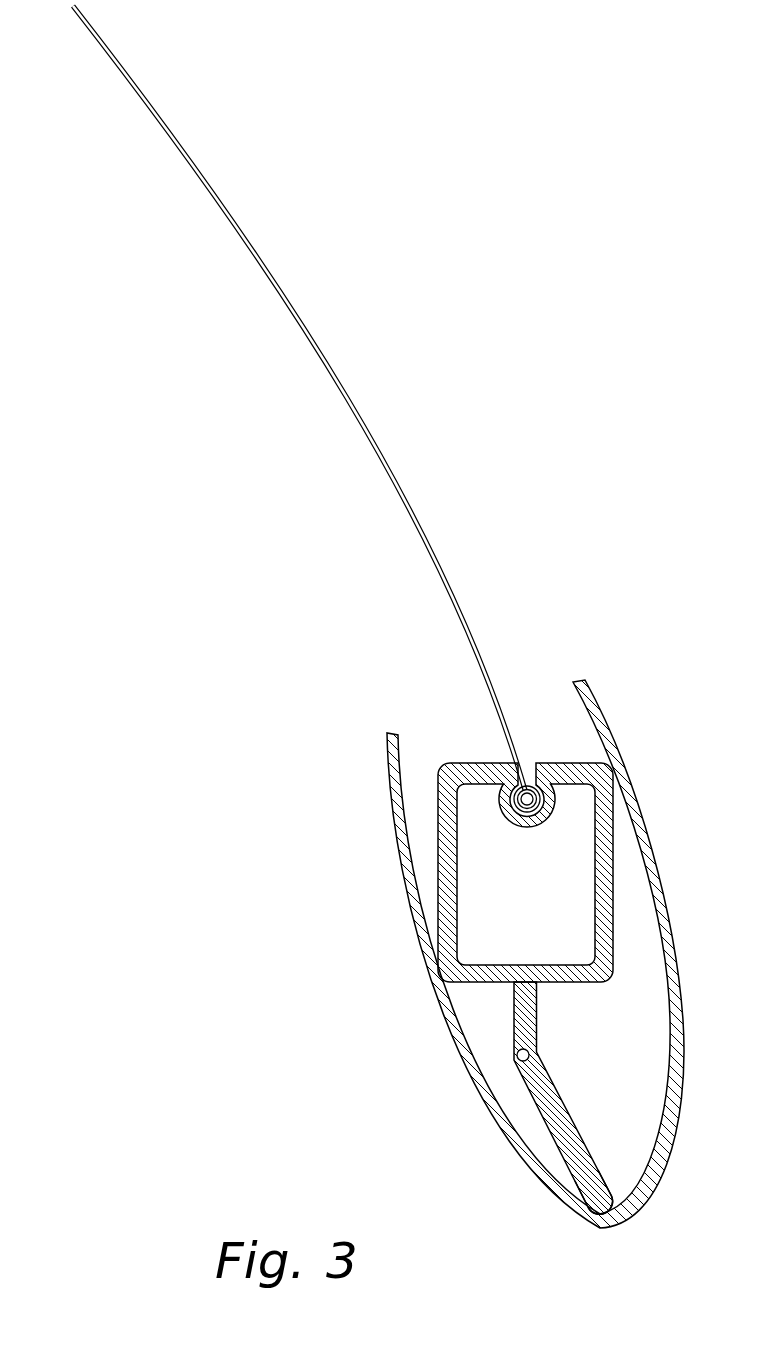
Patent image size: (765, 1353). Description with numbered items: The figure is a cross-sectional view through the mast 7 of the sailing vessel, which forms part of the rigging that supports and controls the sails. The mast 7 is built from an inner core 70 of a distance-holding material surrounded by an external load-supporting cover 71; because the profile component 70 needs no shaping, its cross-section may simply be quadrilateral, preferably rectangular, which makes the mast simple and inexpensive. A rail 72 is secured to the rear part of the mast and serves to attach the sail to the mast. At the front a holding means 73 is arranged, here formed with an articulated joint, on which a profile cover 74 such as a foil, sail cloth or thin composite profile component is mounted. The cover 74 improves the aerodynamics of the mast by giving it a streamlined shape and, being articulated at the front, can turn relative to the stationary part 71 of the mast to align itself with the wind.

The mast 7 is at (372, 853).
The inner core 70 is at (434, 826).
The external load-supporting cover 71 is at (447, 927).
The rail 72 is at (533, 828).
The holding means 73 is at (523, 1010).
The profile cover 74 is at (585, 1220).